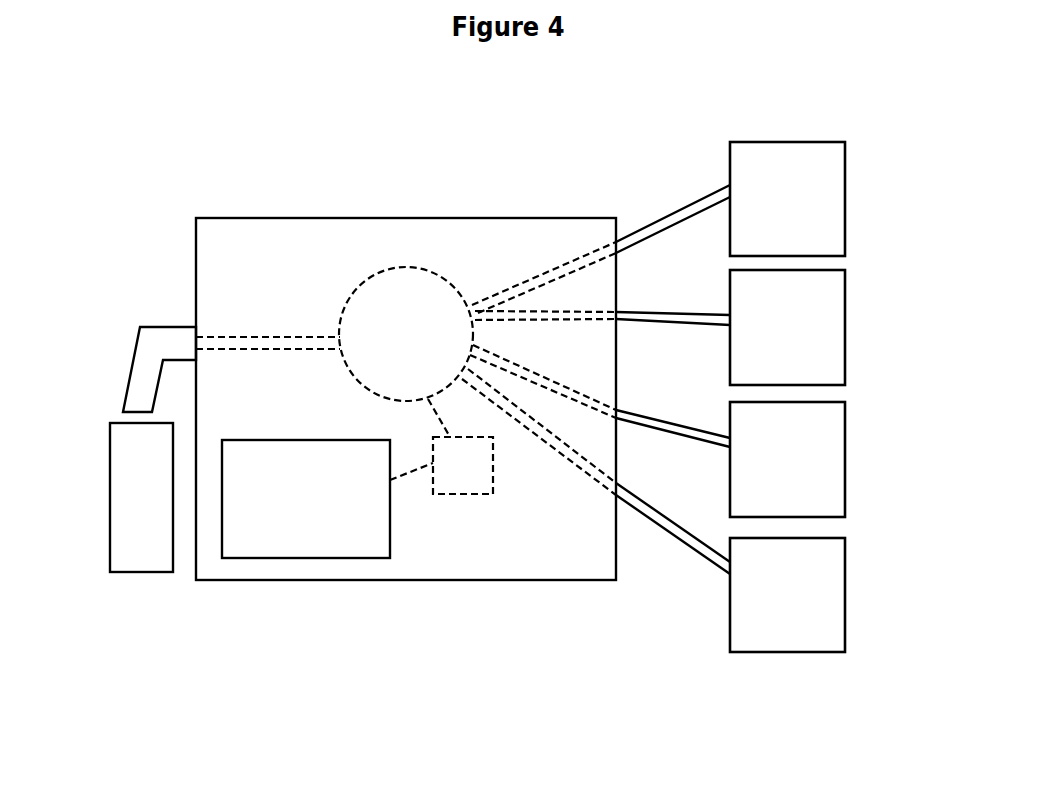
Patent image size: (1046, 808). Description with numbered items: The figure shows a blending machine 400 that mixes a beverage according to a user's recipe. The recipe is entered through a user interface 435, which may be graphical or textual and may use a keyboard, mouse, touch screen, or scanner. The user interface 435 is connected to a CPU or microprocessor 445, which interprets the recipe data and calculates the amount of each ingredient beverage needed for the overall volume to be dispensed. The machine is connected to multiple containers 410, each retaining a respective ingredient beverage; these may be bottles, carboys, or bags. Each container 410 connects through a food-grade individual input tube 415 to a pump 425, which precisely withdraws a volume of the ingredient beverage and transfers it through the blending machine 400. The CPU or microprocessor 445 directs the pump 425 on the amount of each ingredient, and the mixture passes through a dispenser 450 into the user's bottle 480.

The blending machine 400 is at (158, 228).
The container 410 is at (845, 226).
The input tube 415 is at (648, 223).
The pump 425 is at (405, 267).
The user interface 435 is at (333, 559).
The CPU or microprocessor 445 is at (462, 495).
The dispenser 450 is at (128, 390).
The bottle 480 is at (138, 573).